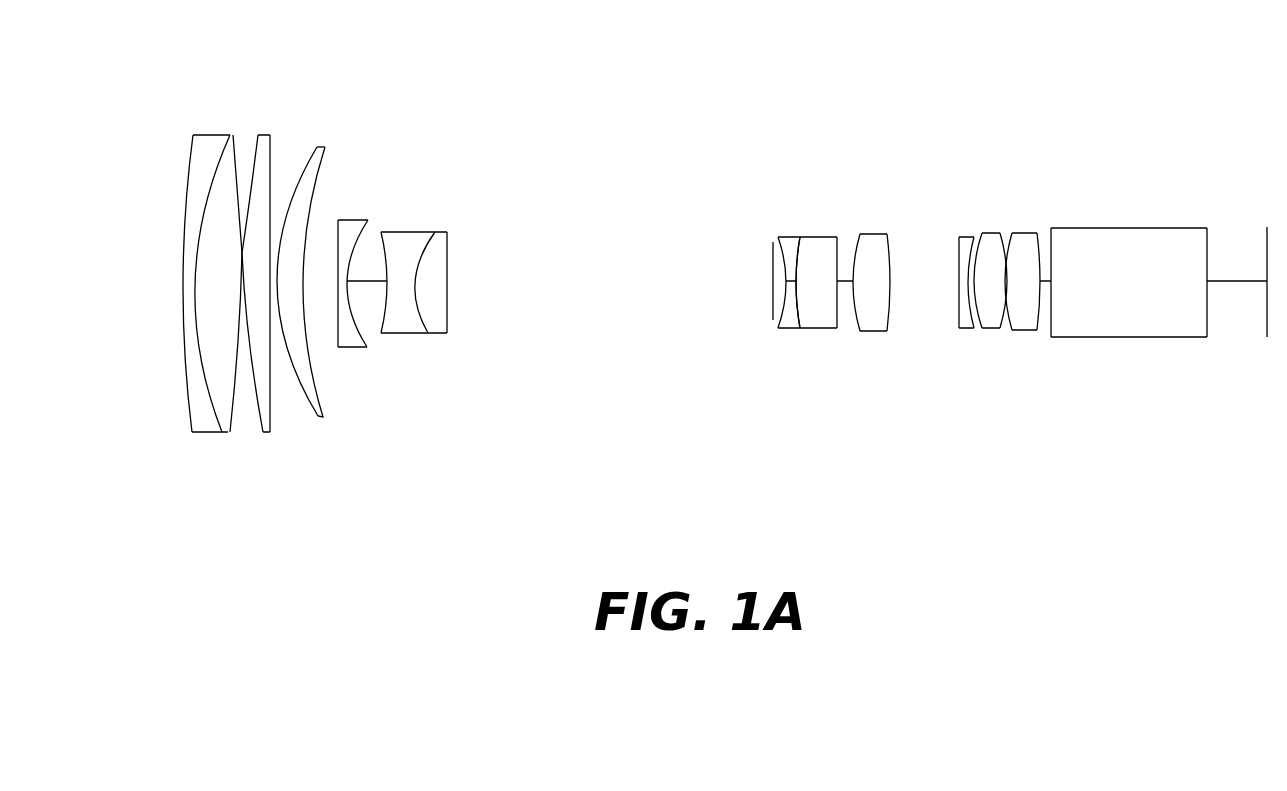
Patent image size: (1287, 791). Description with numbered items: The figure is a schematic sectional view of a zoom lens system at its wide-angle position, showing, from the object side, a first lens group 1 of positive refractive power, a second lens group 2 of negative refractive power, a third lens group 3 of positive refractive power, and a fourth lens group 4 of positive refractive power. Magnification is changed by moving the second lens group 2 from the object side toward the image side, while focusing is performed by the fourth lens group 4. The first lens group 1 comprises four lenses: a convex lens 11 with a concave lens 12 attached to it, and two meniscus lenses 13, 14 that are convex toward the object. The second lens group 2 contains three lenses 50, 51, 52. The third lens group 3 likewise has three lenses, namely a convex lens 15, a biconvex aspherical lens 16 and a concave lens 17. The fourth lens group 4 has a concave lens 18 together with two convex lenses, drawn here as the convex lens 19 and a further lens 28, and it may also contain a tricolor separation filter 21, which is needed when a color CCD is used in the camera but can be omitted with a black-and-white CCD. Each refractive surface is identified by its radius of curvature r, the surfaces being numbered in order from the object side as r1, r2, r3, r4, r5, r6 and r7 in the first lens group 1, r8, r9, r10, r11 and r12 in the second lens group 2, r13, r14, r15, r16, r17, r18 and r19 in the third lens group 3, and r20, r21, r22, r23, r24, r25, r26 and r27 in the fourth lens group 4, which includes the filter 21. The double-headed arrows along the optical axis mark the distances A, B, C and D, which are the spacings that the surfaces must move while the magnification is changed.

The first lens group 1 is at (247, 258).
The second lens group 2 is at (411, 268).
The third lens group 3 is at (815, 251).
The fourth lens group 4 is at (1085, 244).
The convex lens 11 is at (218, 288).
The concave lens 12 is at (178, 285).
The meniscus lens 13 is at (267, 274).
The meniscus lens 14 is at (322, 277).
The lens 50 is at (349, 297).
The lens 51 is at (415, 276).
The lens 52 is at (461, 295).
The convex lens 15 is at (747, 282).
The biconvex aspherical lens 16 is at (815, 272).
The concave lens 17 is at (887, 290).
The concave lens 18 is at (946, 268).
The convex lens 19 is at (997, 260).
The lens element of fourth group 28 is at (1041, 256).
The tricolor separation filter 21 is at (1147, 281).
The distance A is at (320, 305).
The distance B is at (610, 311).
The distance C is at (925, 315).
The distance D is at (1047, 359).
The refractive surface r1 is at (163, 257).
The refractive surface r2 is at (200, 257).
The refractive surface r3 is at (227, 257).
The refractive surface r4 is at (256, 257).
The refractive surface r5 is at (279, 242).
The refractive surface r6 is at (297, 249).
The refractive surface r7 is at (327, 249).
The refractive surface r8 is at (332, 263).
The refractive surface r9 is at (361, 263).
The refractive surface r10 is at (402, 256).
The refractive surface r11 is at (430, 242).
The refractive surface r12 is at (470, 256).
The refractive surface r13 is at (739, 250).
The refractive surface r14 is at (769, 254).
The refractive surface r15 is at (789, 236).
The refractive surface r16 is at (816, 254).
The refractive surface r17 is at (841, 236).
The refractive surface r18 is at (864, 255).
The refractive surface r19 is at (908, 255).
The refractive surface r20 is at (936, 223).
The refractive surface r21 is at (960, 251).
The refractive surface r22 is at (981, 223).
The refractive surface r23 is at (1012, 205).
The refractive surface r24 is at (1027, 252).
The refractive surface r25 is at (1057, 224).
The refractive surface r26 is at (1083, 256).
The refractive surface r27 is at (1224, 256).